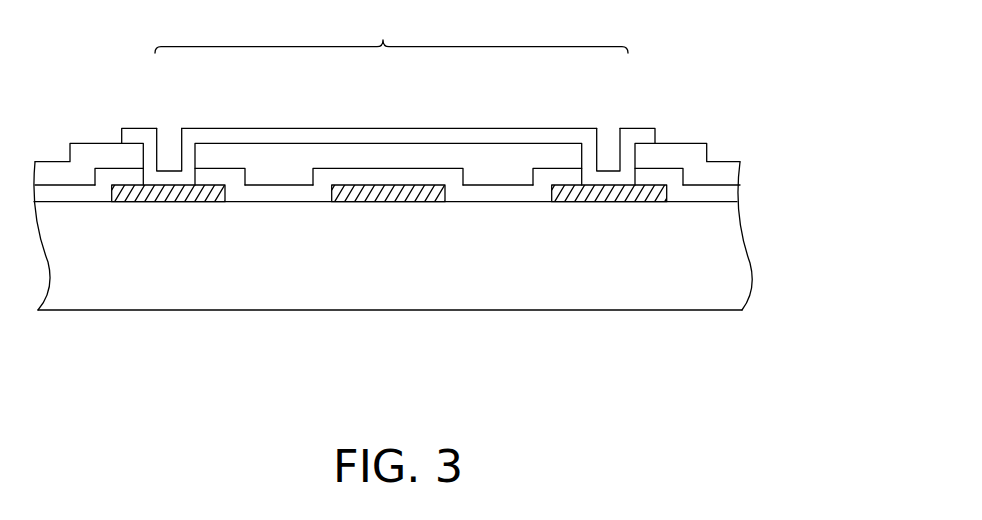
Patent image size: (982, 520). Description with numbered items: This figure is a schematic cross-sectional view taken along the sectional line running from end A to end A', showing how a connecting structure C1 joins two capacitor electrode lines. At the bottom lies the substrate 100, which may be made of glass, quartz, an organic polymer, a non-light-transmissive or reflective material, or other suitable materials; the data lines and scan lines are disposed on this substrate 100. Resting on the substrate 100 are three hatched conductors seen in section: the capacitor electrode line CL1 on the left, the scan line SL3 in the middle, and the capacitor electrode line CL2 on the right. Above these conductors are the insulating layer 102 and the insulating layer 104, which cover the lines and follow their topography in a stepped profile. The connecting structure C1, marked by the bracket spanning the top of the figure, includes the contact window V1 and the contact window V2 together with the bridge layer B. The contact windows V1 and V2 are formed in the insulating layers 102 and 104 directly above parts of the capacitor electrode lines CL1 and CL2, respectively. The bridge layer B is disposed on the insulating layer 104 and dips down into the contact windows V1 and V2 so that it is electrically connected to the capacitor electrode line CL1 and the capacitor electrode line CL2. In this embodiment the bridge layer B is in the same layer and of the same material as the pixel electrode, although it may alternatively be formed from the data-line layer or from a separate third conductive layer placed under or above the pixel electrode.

The substrate 100 is at (733, 255).
The insulating layer 102 is at (727, 193).
The insulating layer 104 is at (731, 174).
The bridge layer B is at (383, 140).
The contact window V1 is at (193, 152).
The contact window V2 is at (582, 152).
The capacitor electrode line CL1 is at (167, 202).
The capacitor electrode line CL2 is at (597, 202).
The scan line SL3 is at (382, 202).
The connecting structure C1 is at (391, 31).
The sectional line end A is at (38, 340).
The sectional line end A' is at (746, 343).